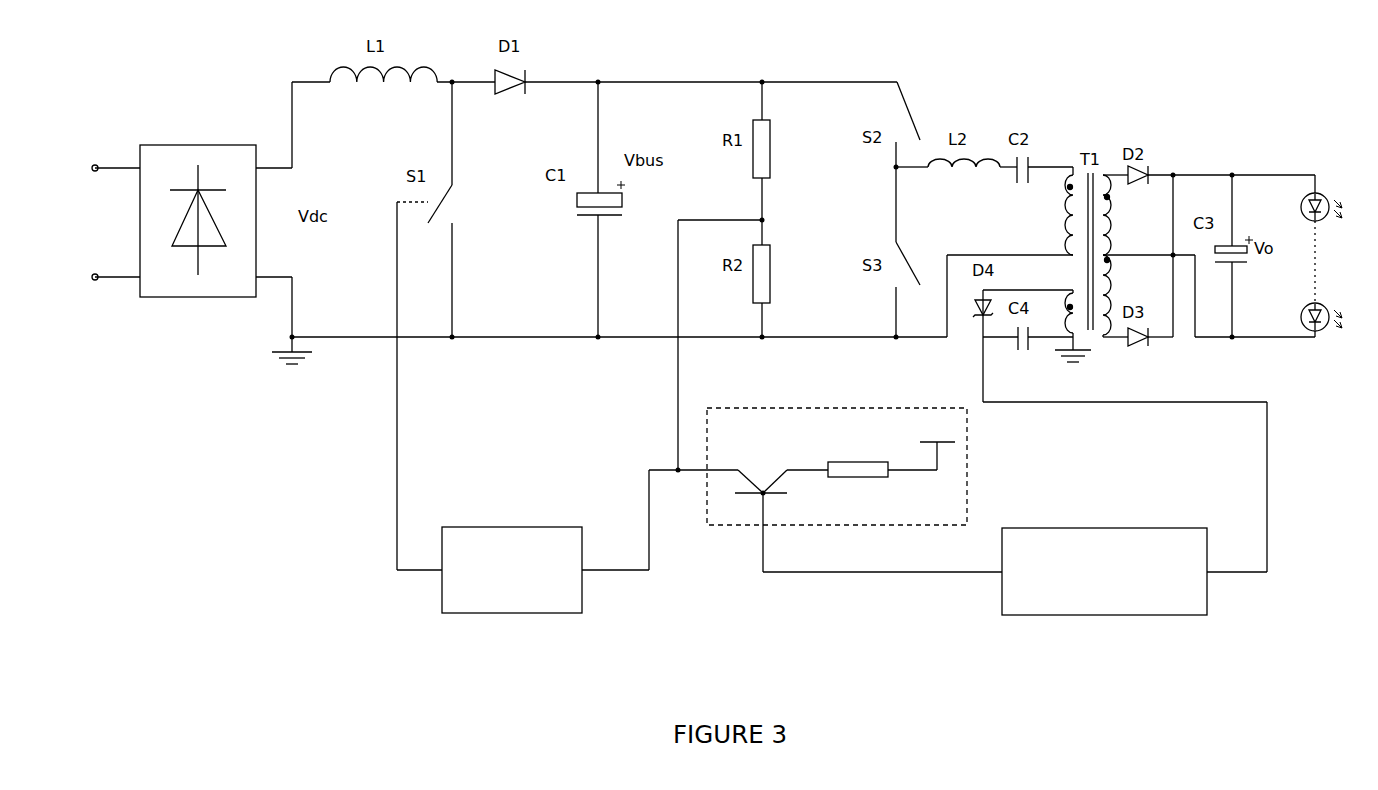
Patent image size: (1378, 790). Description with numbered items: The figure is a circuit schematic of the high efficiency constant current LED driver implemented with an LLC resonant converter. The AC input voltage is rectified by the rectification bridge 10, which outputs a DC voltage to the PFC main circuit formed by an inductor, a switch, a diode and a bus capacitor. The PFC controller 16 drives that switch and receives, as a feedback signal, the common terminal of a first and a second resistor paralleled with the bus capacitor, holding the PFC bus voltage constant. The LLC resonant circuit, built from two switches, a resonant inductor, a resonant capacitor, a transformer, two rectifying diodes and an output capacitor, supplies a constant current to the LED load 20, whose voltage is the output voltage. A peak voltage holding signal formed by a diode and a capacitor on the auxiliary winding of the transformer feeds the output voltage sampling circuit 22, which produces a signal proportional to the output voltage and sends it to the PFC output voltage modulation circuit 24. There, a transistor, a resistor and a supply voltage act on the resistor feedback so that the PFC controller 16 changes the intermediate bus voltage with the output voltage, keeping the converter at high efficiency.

The rectification bridge 10 is at (167, 145).
The PFC controller 16 is at (562, 613).
The LED load 20 is at (1322, 338).
The output voltage sampling circuit 22 is at (1173, 615).
The PFC output voltage modulation circuit 24 is at (967, 453).